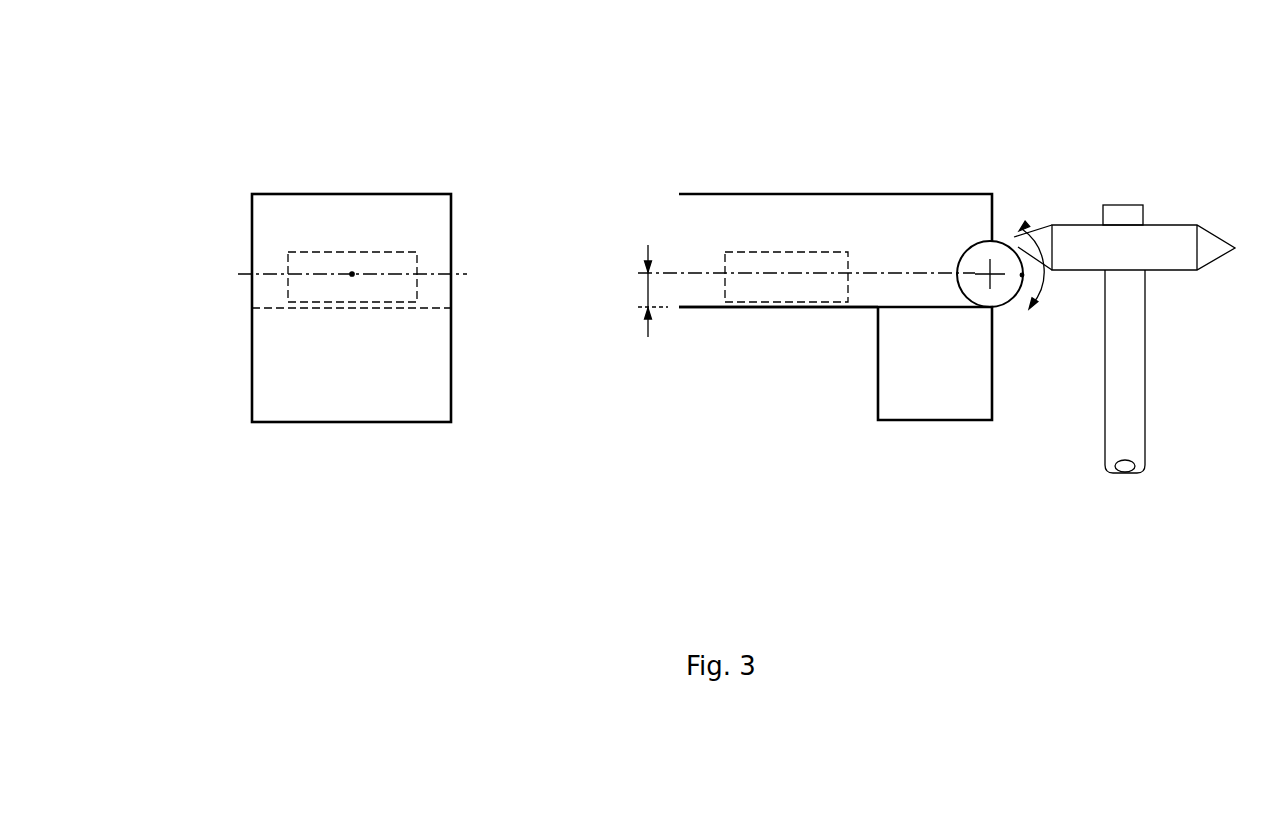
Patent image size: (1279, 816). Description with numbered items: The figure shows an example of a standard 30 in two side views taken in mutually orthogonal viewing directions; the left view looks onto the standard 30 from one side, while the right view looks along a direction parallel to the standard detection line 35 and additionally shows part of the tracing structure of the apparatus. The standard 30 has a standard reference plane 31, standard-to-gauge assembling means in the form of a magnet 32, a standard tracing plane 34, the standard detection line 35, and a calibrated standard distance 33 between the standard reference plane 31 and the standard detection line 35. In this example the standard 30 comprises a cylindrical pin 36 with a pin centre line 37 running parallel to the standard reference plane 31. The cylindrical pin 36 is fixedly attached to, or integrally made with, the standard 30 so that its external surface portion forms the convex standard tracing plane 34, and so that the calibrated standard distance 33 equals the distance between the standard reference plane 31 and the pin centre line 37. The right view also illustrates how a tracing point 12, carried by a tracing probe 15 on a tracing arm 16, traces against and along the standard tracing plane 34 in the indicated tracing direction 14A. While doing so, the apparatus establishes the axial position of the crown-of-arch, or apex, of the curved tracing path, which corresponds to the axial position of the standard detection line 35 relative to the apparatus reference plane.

The standard 30 is at (349, 100).
The standard reference plane 31 is at (410, 308).
The standard-to-gauge assembling means 32 is at (304, 242).
The calibrated standard distance 33 is at (640, 300).
The standard tracing plane 34 is at (1017, 312).
The standard detection line 35 is at (352, 274).
The cylindrical pin 36 is at (966, 250).
The pin centre line 37 is at (397, 275).
The tracing point 12 is at (1021, 228).
The tracing direction 14A is at (1055, 292).
The tracing probe 15 is at (1126, 208).
The tracing arm 16 is at (1156, 384).